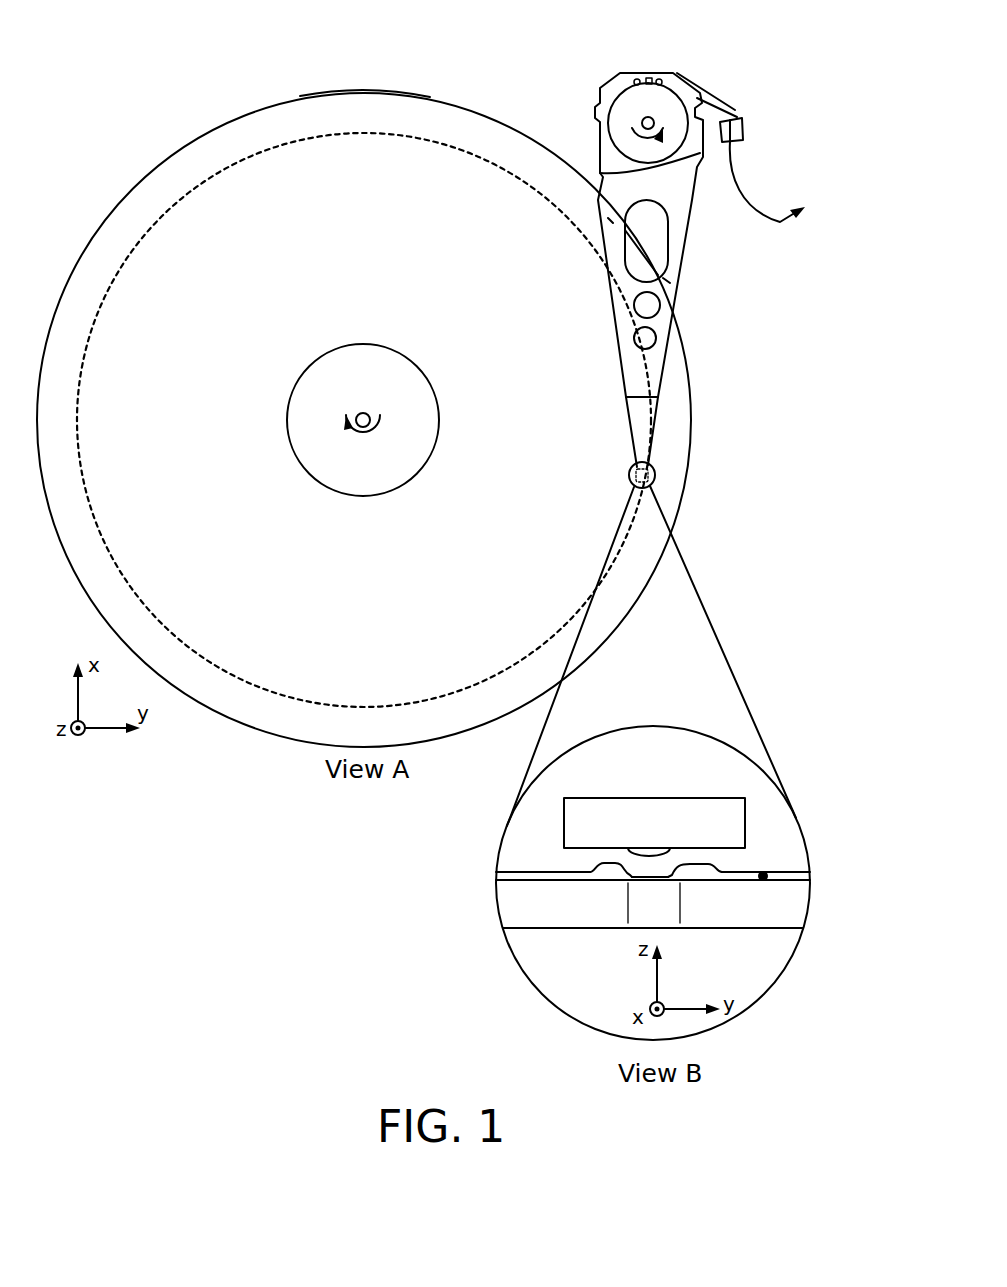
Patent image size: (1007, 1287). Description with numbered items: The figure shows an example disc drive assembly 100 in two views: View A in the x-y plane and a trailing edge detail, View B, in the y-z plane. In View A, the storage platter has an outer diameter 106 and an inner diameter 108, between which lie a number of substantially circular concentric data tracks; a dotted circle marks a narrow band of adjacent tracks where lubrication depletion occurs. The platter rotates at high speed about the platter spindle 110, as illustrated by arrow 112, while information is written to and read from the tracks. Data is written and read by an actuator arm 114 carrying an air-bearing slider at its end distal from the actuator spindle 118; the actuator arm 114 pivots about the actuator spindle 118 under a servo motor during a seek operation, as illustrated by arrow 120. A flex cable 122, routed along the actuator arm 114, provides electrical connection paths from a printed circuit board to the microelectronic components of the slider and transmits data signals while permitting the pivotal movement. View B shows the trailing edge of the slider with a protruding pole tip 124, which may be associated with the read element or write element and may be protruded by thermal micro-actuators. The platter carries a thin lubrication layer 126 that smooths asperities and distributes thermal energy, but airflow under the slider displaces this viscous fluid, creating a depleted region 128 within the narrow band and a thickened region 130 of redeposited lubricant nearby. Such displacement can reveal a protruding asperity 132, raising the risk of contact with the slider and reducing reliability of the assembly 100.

The disc drive assembly 100 is at (134, 76).
The outer diameter 106 is at (305, 99).
The inner diameter 108 is at (358, 345).
The platter spindle 110 is at (355, 417).
The arrow 112 is at (380, 430).
The actuator arm 114 is at (688, 196).
The actuator spindle 118 is at (640, 114).
The arrow 120 is at (624, 128).
The flex cable 122 is at (768, 222).
The protruding pole tip 124 is at (653, 852).
The lubrication layer 126 is at (503, 875).
The depleted region 128 is at (680, 858).
The thickened region 130 is at (574, 865).
The asperity 132 is at (764, 878).